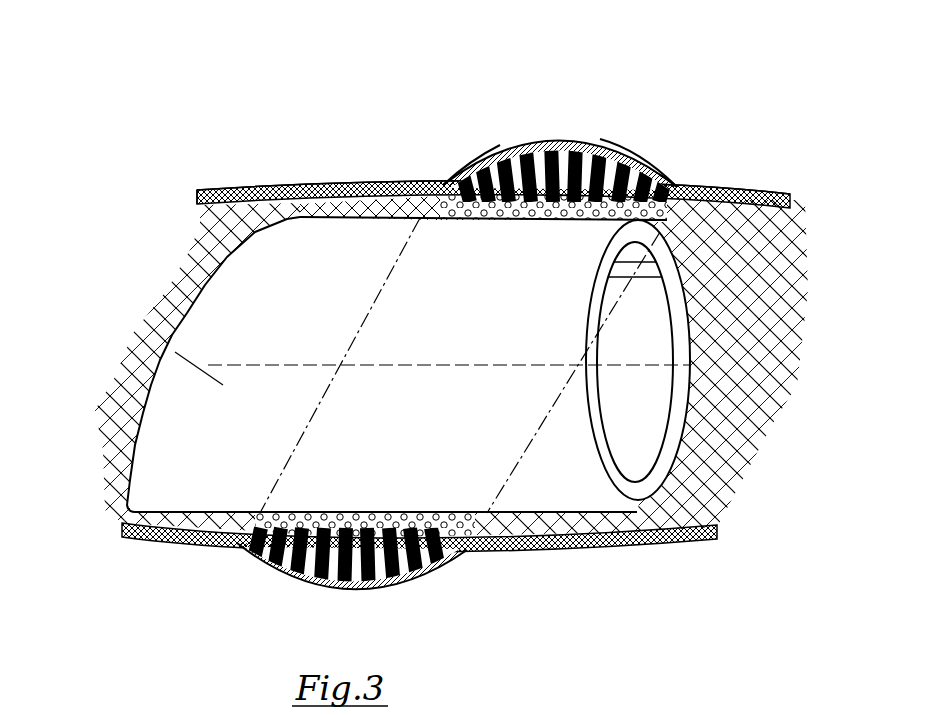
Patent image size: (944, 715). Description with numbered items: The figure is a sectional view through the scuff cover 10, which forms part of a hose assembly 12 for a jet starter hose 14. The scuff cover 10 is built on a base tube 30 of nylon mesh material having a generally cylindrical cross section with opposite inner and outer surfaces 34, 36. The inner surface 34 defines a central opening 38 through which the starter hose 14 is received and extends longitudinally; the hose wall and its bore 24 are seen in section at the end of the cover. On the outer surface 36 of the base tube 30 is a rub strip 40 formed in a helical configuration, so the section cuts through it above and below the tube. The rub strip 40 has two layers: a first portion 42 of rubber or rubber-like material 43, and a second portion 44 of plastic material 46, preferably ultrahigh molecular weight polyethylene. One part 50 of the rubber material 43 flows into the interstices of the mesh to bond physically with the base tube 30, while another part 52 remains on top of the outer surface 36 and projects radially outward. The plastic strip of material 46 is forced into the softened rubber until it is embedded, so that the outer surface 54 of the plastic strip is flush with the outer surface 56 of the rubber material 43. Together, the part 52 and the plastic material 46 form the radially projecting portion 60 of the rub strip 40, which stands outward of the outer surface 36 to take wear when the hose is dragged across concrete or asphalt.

The scuff cover 10 is at (585, 579).
The hose assembly 12 is at (720, 605).
The jet starter hose 14 is at (705, 391).
The bore 24 is at (623, 434).
The base tube 30 is at (189, 181).
The inner surface 34 is at (203, 206).
The outer surface 36 is at (220, 195).
The central opening 38 is at (117, 407).
The rub strip 40 is at (571, 99).
The first portion 42 is at (436, 158).
The rubber material 43 is at (523, 163).
The second portion 44 is at (625, 135).
The plastic material 46 is at (573, 157).
The one part of the rubber material 50 is at (383, 510).
The another part of the rubber material 52 is at (258, 566).
The outer surface of the plastic strip 54 is at (540, 127).
The outer surface of the rubber material 56 is at (660, 165).
The radially projecting portion 60 is at (465, 578).